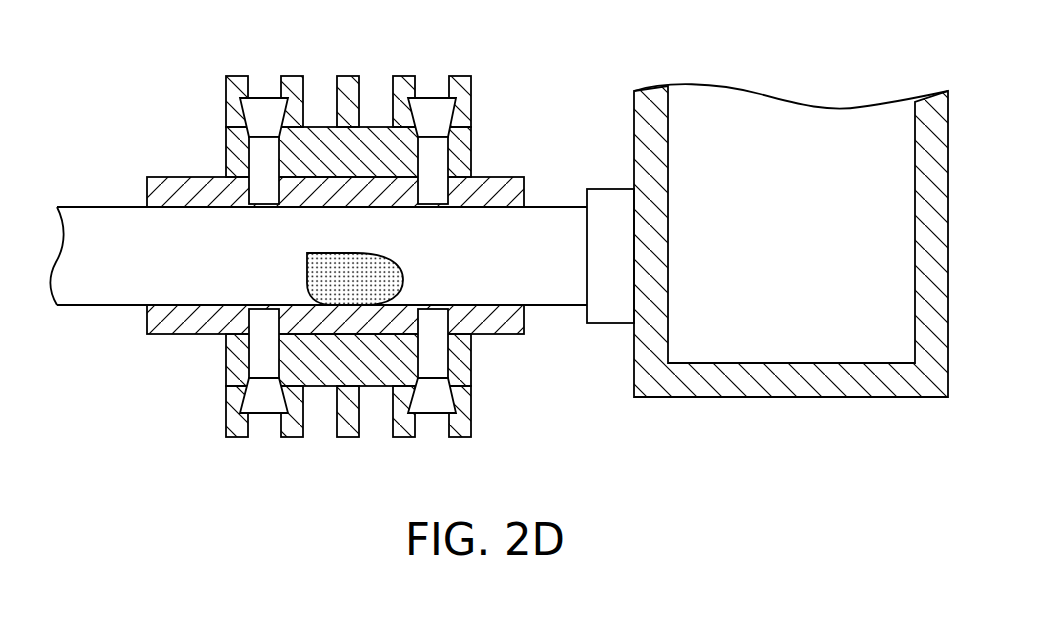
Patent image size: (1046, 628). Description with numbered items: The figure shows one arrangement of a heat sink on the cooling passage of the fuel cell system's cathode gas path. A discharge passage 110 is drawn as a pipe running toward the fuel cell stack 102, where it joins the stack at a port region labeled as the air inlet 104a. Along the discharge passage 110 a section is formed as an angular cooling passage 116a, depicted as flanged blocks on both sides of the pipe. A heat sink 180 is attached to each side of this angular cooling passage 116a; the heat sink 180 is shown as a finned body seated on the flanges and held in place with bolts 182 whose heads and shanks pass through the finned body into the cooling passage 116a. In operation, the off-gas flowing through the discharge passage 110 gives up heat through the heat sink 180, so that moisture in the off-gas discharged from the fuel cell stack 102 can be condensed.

The fuel cell stack 102 is at (790, 335).
The air inlet 104a is at (603, 323).
The discharge passage 110 is at (101, 307).
The cooling passage 116a is at (176, 332).
The heat sink 180 is at (350, 77).
The bolts 182 is at (265, 408).